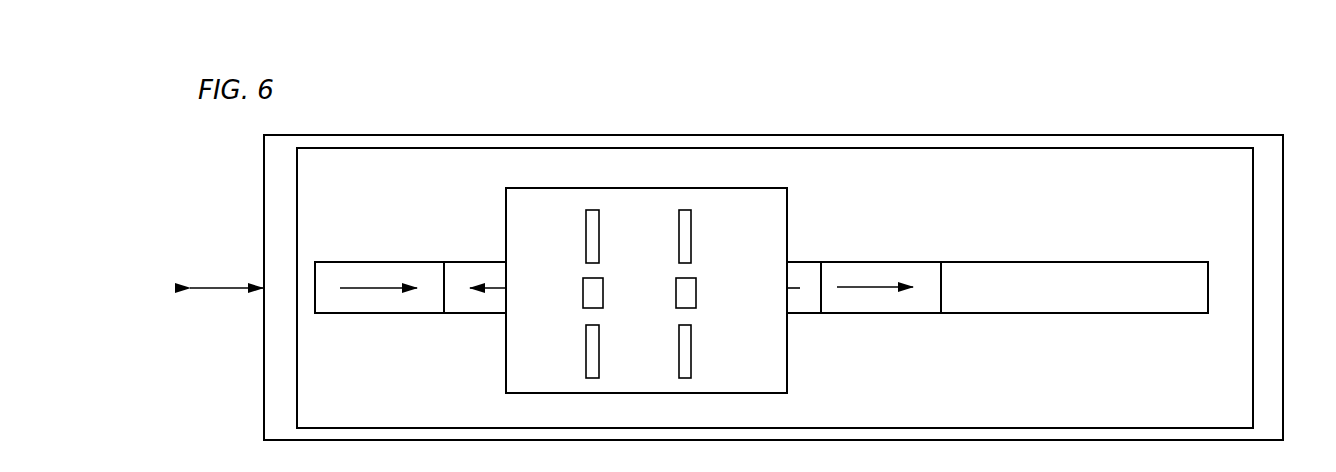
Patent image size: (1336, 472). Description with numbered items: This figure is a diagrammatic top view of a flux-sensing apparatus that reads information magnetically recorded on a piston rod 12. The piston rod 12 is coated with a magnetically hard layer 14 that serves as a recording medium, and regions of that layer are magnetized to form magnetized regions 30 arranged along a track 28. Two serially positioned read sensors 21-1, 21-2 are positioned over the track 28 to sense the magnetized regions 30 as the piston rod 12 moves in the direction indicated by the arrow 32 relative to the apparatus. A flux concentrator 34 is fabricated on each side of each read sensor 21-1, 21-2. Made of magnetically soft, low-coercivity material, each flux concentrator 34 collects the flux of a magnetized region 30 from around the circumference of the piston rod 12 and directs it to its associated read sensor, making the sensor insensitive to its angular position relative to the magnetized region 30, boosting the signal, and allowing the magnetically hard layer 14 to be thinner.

The piston rod 12 is at (1220, 133).
The magnetically hard layer 14 is at (1207, 208).
The read sensor 21-1 is at (608, 276).
The read sensor 21-2 is at (676, 302).
The track 28 is at (1048, 260).
The magnetized regions 30 is at (347, 262).
The arrow 32 is at (227, 285).
The flux concentrator 34 is at (585, 235).